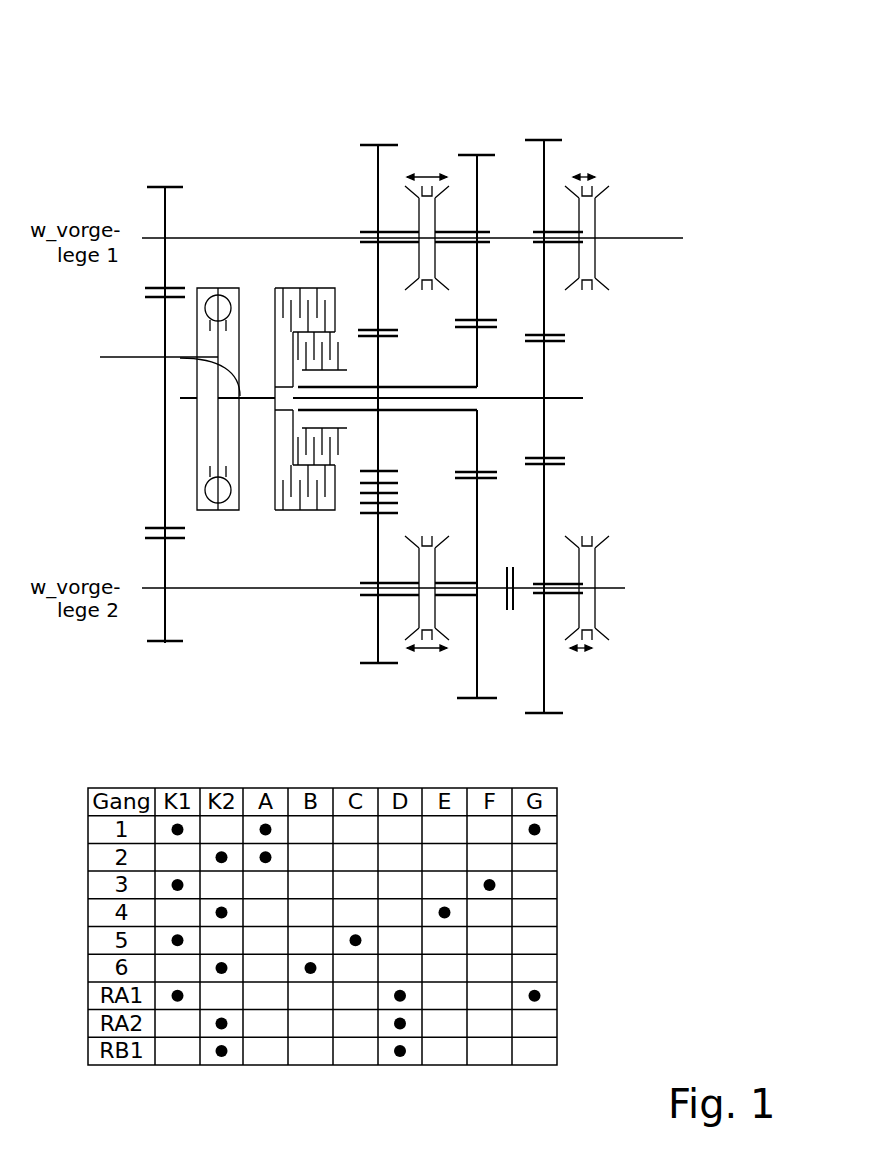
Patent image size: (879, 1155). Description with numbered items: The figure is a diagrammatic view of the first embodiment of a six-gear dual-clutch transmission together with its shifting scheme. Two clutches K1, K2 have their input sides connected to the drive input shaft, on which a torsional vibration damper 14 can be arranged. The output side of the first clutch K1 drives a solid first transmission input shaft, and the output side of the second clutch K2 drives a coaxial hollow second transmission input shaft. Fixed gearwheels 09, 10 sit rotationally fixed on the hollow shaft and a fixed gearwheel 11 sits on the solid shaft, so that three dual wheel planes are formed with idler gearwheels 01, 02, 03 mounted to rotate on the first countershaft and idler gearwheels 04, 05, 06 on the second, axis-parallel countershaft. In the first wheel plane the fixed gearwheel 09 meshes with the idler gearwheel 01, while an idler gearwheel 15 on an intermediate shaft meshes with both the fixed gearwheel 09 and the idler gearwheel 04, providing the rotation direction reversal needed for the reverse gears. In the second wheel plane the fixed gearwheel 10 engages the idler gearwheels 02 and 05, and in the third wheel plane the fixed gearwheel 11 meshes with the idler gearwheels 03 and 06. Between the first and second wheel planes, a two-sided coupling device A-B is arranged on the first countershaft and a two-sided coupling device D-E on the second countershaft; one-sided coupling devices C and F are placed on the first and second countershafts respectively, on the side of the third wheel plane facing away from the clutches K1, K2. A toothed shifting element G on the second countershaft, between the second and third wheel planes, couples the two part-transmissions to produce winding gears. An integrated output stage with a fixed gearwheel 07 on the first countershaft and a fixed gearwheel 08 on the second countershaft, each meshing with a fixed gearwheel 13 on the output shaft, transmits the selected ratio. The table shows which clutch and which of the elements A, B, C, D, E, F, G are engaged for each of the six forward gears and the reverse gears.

The idler gearwheel 01 is at (374, 145).
The idler gearwheel 02 is at (467, 155).
The idler gearwheel 03 is at (550, 140).
The idler gearwheel 04 is at (374, 667).
The idler gearwheel 05 is at (485, 700).
The idler gearwheel 06 is at (553, 714).
The fixed gearwheel 07 is at (165, 187).
The fixed gearwheel 08 is at (163, 643).
The fixed gearwheel 09 is at (378, 352).
The fixed gearwheel 10 is at (478, 338).
The fixed gearwheel 11 is at (547, 358).
The fixed gearwheel 13 is at (167, 313).
The torsional vibration damper 14 is at (236, 511).
The idler gearwheel 15 is at (362, 502).
The first clutch K1 is at (267, 298).
The second clutch K2 is at (267, 345).
The coupling device direction A is at (422, 222).
The coupling device direction B is at (462, 198).
The coupling device C is at (587, 222).
The coupling device direction D is at (426, 608).
The coupling device direction E is at (456, 631).
The coupling device F is at (587, 608).
The shifting element G is at (512, 607).